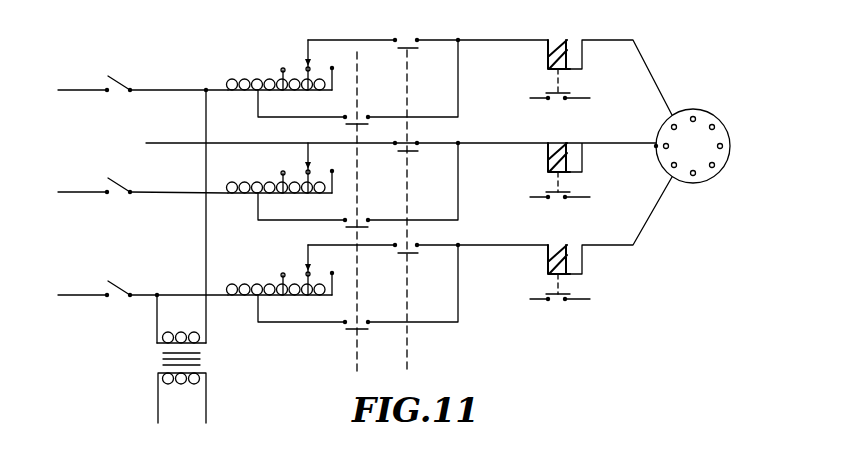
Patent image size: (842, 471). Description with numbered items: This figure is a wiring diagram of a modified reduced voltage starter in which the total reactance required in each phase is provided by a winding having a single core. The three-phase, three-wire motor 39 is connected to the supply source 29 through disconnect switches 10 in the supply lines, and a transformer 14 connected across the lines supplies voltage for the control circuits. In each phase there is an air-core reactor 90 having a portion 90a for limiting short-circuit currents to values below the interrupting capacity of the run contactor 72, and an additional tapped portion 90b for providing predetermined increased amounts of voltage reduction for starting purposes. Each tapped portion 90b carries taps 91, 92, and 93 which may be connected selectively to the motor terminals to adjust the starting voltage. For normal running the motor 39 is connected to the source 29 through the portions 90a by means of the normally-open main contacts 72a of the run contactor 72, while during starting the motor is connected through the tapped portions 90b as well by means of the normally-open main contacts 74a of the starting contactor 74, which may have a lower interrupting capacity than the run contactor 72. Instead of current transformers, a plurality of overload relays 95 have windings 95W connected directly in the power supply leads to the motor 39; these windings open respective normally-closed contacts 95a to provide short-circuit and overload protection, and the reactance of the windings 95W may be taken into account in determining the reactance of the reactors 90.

The supply source 29 is at (80, 288).
The disconnect switch 10 is at (118, 280).
The transformer 14 is at (128, 375).
The air-core reactor 90 is at (296, 249).
The tap 91 is at (283, 272).
The tap 92 is at (310, 268).
The tap 93 is at (340, 279).
The reactor portion 90a is at (242, 297).
The tapped reactor portion 90b is at (295, 316).
The main contacts of run contactor 72a is at (360, 319).
The main contacts of starting contactor 74a is at (410, 244).
The run contactor 72 is at (355, 364).
The starting contactor 74 is at (410, 358).
The overload relay winding 95W is at (548, 268).
The overload relay 95 is at (560, 290).
The normally-closed contacts of overload relay 95a is at (571, 327).
The motor 39 is at (726, 124).